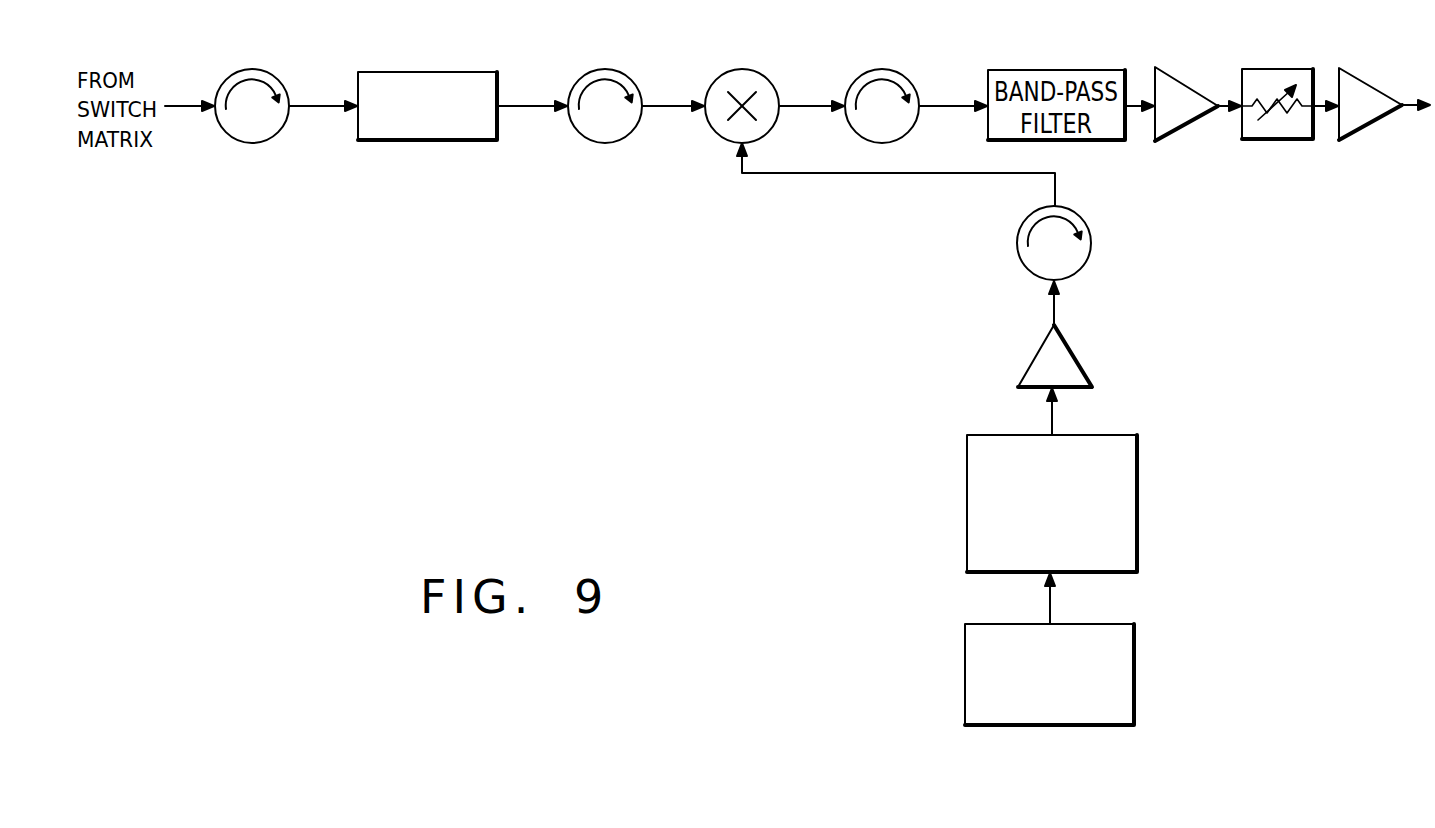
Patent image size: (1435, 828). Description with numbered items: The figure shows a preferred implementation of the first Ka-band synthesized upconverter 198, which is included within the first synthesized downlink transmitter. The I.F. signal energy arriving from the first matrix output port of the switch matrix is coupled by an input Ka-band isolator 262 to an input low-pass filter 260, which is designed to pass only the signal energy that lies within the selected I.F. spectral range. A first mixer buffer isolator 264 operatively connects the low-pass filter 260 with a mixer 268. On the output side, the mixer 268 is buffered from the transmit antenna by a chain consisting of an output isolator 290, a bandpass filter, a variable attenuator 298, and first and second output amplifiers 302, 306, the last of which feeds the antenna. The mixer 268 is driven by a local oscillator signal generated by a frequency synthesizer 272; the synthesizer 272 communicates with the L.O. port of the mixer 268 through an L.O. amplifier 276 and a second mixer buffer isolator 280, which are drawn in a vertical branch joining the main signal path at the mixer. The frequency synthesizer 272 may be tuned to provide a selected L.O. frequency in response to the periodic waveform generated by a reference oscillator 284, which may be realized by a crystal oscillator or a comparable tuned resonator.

The first Ka-band synthesized upconverter 198 is at (606, 299).
The input low-pass filter 260 is at (437, 142).
The input Ka-band isolator 262 is at (253, 146).
The first mixer buffer isolator 264 is at (625, 72).
The mixer 268 is at (752, 70).
The frequency synthesizer 272 is at (1137, 472).
The L.O. amplifier 276 is at (1080, 364).
The second mixer buffer isolator 280 is at (1017, 256).
The reference oscillator 284 is at (1134, 650).
The output isolator 290 is at (900, 71).
The variable attenuator 298 is at (1272, 142).
The first output amplifier 302 is at (1162, 144).
The second output amplifier 306 is at (1374, 128).